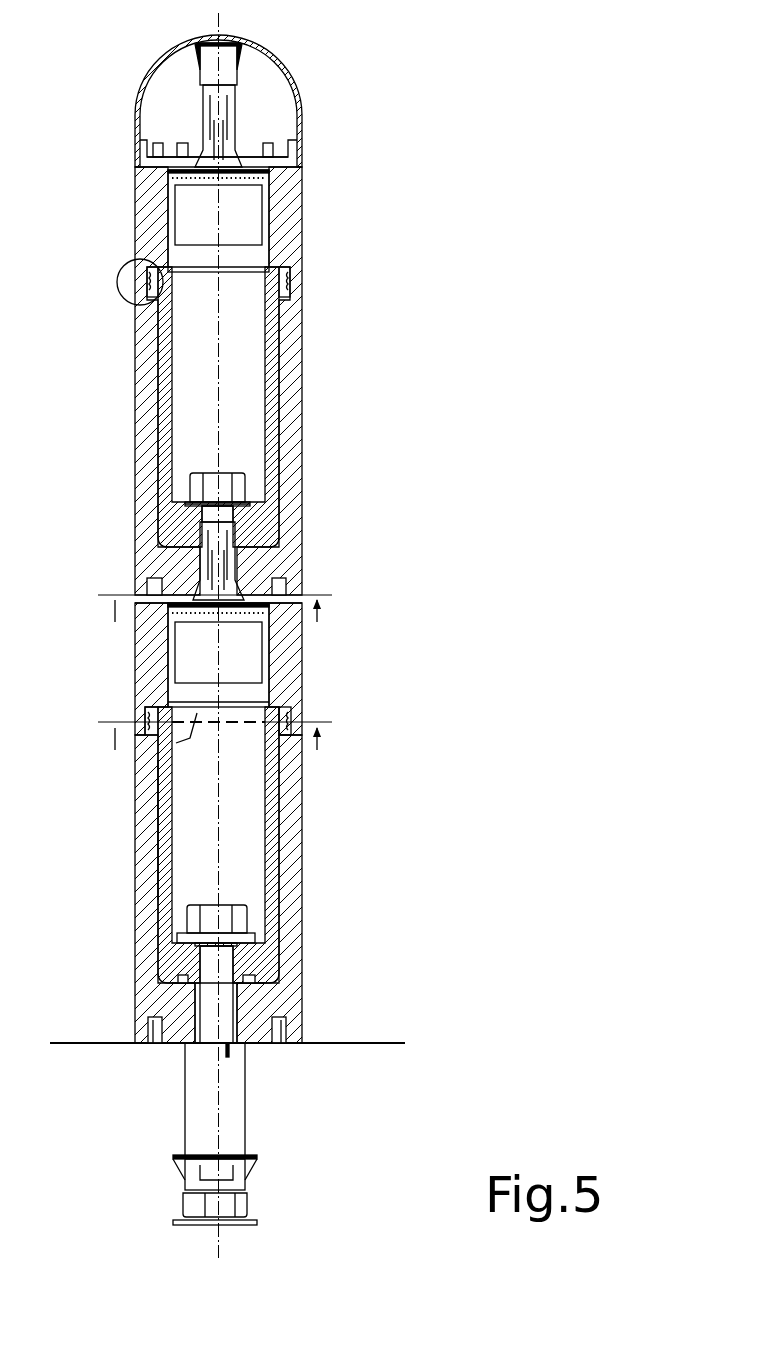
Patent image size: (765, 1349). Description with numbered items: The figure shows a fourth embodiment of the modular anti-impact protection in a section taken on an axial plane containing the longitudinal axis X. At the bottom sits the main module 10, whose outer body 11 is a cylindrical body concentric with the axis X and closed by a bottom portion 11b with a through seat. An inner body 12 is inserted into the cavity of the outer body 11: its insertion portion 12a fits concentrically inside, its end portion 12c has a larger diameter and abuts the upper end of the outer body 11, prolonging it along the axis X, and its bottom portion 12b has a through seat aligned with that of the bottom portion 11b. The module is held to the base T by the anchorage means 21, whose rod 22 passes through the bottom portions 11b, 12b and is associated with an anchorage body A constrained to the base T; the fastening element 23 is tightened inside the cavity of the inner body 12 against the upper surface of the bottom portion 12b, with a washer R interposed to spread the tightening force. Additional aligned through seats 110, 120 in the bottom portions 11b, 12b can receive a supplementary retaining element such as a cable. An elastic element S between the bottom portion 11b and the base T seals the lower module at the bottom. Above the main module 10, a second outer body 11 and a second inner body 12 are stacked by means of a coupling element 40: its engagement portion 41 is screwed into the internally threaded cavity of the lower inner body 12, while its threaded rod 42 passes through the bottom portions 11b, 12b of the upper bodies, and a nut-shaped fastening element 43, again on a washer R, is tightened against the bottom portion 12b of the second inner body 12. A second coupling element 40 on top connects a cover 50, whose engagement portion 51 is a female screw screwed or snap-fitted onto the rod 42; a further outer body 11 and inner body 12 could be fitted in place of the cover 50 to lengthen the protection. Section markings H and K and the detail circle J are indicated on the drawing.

The main module 10 is at (317, 370).
The outer body 11 is at (133, 398).
The bottom portion of the outer body 11b is at (260, 1005).
The inner body 12 is at (300, 248).
The insertion portion 12a is at (143, 833).
The bottom portion of the inner body 12b is at (180, 962).
The end portion 12c is at (148, 665).
The anchorage means 21 is at (287, 1133).
The rod 22 is at (218, 973).
The fastening element 23 is at (237, 913).
The coupling element 40 is at (170, 258).
The engagement portion 41 is at (240, 223).
The rod of the coupling element 42 is at (212, 115).
The fastening element of the coupling element 43 is at (195, 482).
The cover 50 is at (157, 60).
The engagement portion of the cover 51 is at (244, 44).
The through seat of the outer body bottom portion 110 is at (303, 1047).
The through seat of the inner body bottom portion 120 is at (237, 982).
The anchorage body A is at (197, 1205).
The washer R is at (233, 518).
The elastic element S is at (152, 1032).
The base T is at (405, 1043).
The longitudinal axis X is at (205, 631).
The section line H- H is at (215, 624).
The section line K- K is at (215, 751).
The detail J is at (138, 294).